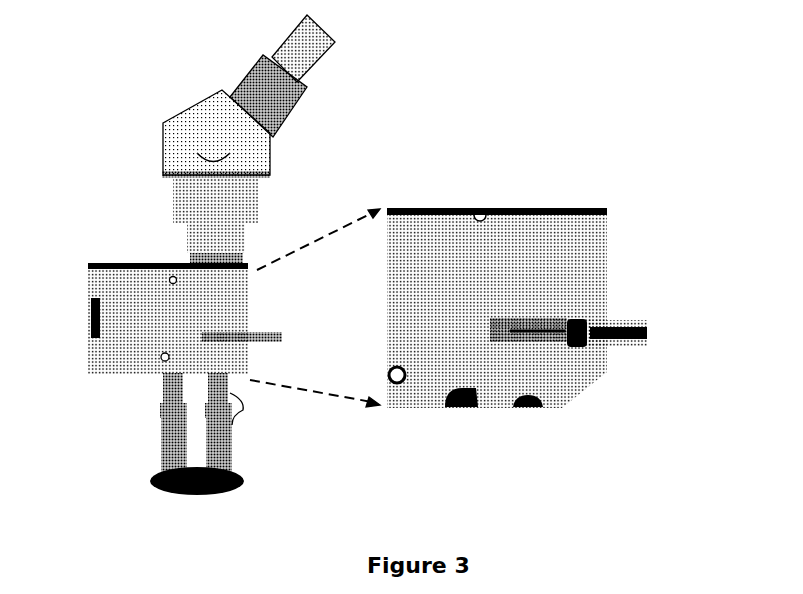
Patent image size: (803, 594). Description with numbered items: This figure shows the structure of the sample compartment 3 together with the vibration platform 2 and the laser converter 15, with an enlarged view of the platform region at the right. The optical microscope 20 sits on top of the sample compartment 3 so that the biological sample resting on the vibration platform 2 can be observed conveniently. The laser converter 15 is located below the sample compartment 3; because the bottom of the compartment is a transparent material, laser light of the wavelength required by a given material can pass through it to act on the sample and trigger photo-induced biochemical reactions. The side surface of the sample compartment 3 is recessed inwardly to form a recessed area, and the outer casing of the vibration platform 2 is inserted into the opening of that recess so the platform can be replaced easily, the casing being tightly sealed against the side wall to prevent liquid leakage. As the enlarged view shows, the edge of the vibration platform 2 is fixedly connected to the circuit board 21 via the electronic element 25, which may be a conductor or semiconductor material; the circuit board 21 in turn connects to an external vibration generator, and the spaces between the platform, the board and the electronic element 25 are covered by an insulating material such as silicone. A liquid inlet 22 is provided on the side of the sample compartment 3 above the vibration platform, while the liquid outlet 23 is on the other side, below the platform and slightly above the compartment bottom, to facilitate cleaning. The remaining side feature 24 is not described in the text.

The optical microscope 20 is at (418, 130).
The sample compartment 3 is at (390, 292).
The vibration platform 2 is at (250, 333).
The liquid inlet 22 is at (109, 252).
The liquid outlet 23 is at (97, 376).
The side opening 24 is at (88, 323).
The laser converter 15 is at (284, 434).
The circuit board 21 is at (670, 307).
The electronic element 25 is at (643, 358).